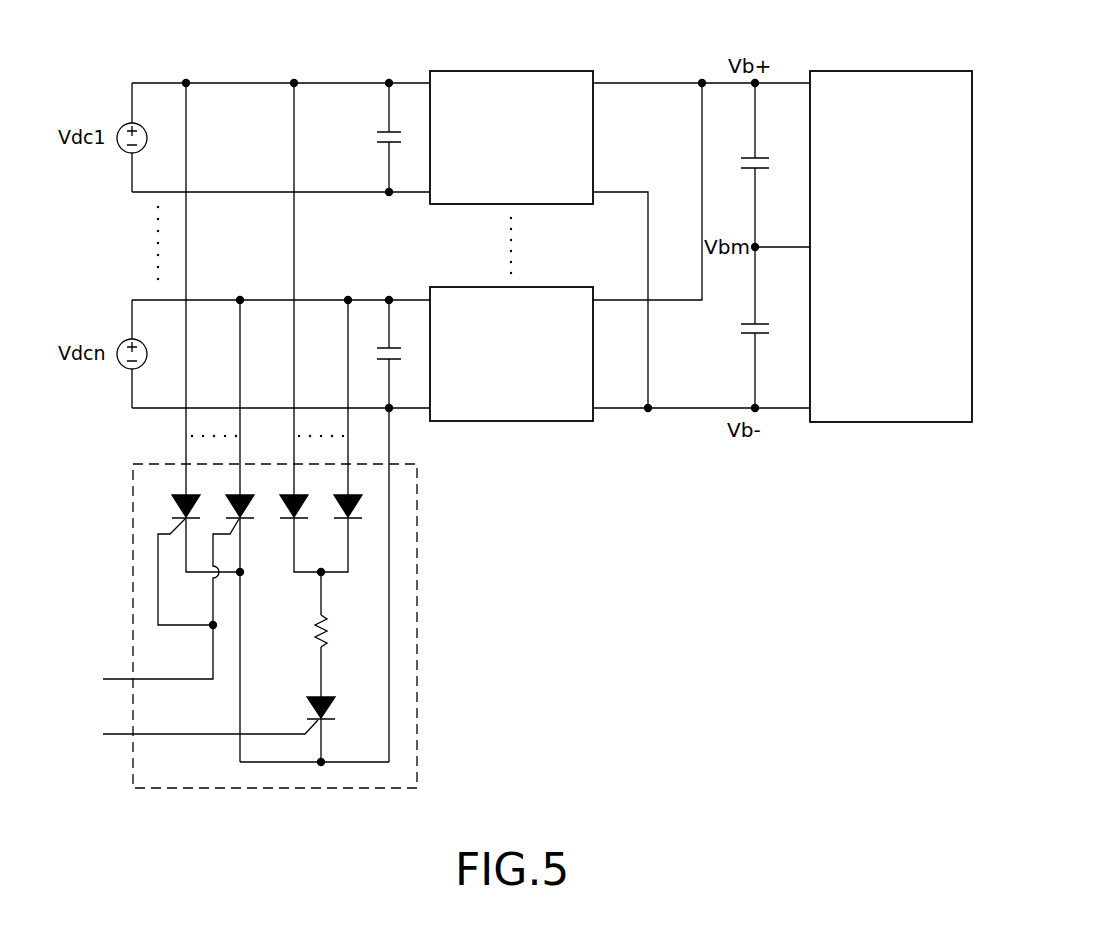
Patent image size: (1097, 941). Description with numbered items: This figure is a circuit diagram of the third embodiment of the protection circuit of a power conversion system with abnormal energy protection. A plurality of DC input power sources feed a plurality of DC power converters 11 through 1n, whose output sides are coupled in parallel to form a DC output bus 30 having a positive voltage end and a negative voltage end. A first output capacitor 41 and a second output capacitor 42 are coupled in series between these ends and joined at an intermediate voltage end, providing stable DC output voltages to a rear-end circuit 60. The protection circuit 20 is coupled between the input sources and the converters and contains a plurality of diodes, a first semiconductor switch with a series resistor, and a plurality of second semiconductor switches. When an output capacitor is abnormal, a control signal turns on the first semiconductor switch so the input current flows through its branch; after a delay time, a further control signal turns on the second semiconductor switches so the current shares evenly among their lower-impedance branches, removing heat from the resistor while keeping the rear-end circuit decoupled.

The DC power converter 11 is at (513, 76).
The DC power converter 1n is at (522, 293).
The protection circuit 20 is at (412, 626).
The DC output bus 30 is at (785, 74).
The first output capacitor 41 is at (761, 152).
The second output capacitor 42 is at (761, 318).
The rear-end circuit 60 is at (892, 76).